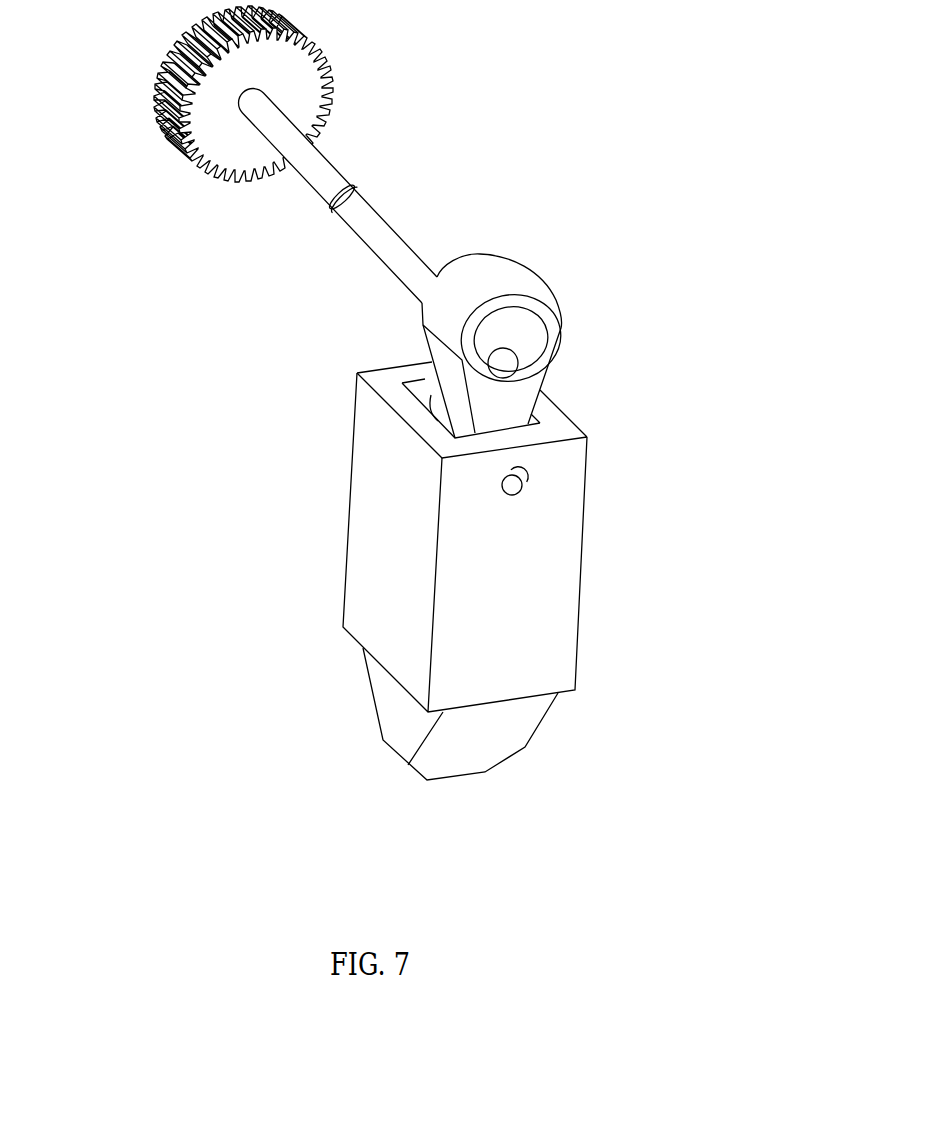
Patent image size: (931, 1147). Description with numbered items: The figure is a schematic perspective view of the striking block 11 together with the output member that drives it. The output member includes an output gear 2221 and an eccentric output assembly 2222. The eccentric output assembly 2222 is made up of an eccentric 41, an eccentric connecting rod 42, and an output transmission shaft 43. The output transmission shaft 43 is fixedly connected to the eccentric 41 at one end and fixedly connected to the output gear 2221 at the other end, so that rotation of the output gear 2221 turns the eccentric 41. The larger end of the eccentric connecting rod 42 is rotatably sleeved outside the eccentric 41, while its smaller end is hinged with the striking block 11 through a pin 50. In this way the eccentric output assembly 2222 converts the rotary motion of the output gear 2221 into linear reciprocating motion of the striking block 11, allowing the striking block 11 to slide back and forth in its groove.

The striking block 11 is at (547, 598).
The eccentric 41 is at (530, 342).
The eccentric connecting rod 42 is at (496, 277).
The output transmission shaft 43 is at (248, 259).
The pin 50 is at (537, 496).
The output gear 2221 is at (181, 118).
The eccentric output assembly 2222 is at (449, 176).